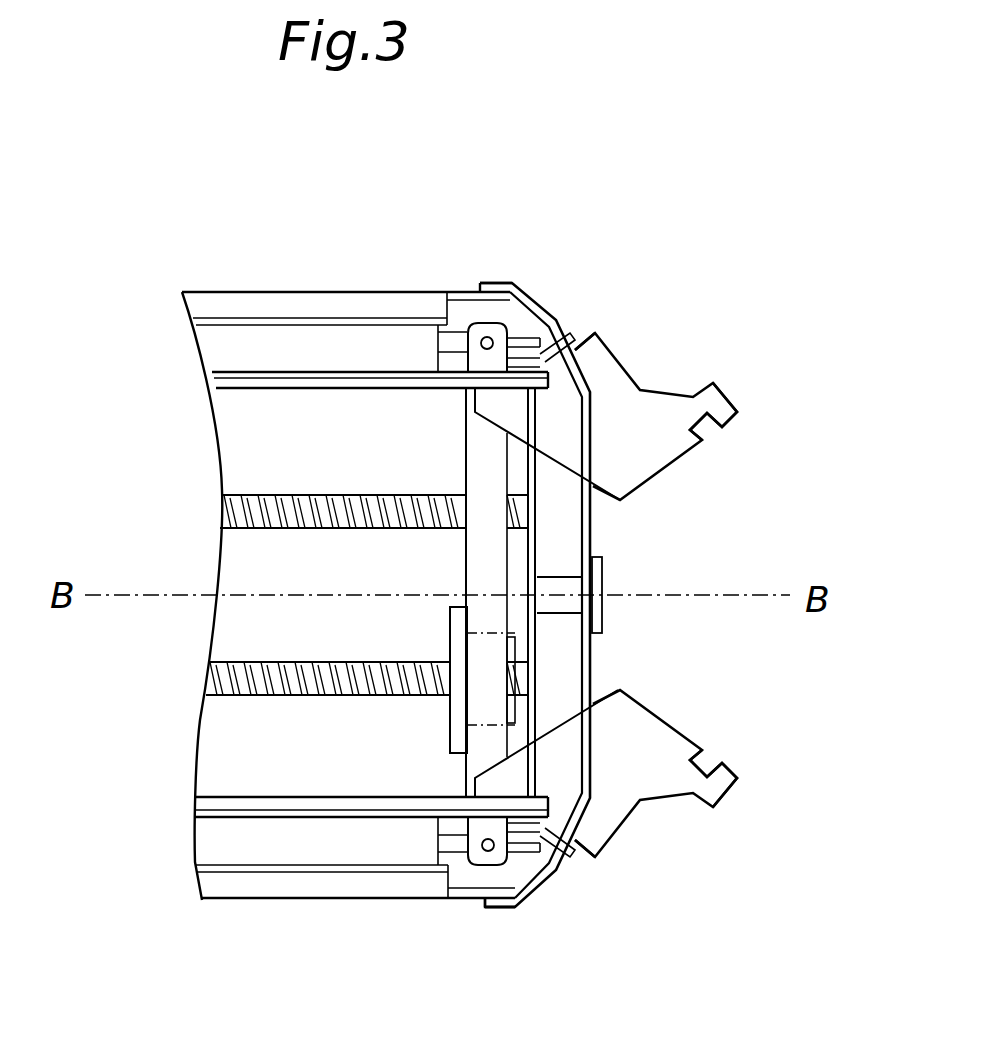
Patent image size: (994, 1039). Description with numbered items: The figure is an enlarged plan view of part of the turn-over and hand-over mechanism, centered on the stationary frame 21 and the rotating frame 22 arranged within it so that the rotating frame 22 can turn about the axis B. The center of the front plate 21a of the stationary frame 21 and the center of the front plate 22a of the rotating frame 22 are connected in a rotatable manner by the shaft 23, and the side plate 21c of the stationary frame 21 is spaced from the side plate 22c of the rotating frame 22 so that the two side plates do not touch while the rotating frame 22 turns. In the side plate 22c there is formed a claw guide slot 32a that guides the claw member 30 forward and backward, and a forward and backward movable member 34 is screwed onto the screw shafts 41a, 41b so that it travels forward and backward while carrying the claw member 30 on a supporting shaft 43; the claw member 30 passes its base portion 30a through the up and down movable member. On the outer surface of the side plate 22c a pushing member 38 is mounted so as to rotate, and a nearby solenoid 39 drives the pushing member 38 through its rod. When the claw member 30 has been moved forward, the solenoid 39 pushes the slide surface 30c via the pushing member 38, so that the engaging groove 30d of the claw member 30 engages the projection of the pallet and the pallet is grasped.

The stationary frame 21 is at (318, 282).
The front plate of the stationary frame 21a is at (595, 530).
The side plate of the stationary frame 21c is at (203, 318).
The rotating frame 22 is at (407, 364).
The front plate of the rotating frame 22a is at (537, 680).
The side plate of the rotating frame 22c is at (255, 372).
The shaft 23 is at (558, 585).
The claw member 30 is at (675, 384).
The base portion of the claw member 30a is at (468, 880).
The slide surface of the claw member 30c is at (592, 318).
The engaging groove of the claw member 30d is at (703, 432).
The first claw guide slot 32a is at (492, 333).
The forward and backward movable member 34 is at (490, 747).
The pushing member 38 is at (562, 334).
The solenoid 39 is at (372, 360).
The screw shaft 41a is at (338, 493).
The screw shaft 41b is at (287, 697).
The supporting shaft 43 is at (483, 335).